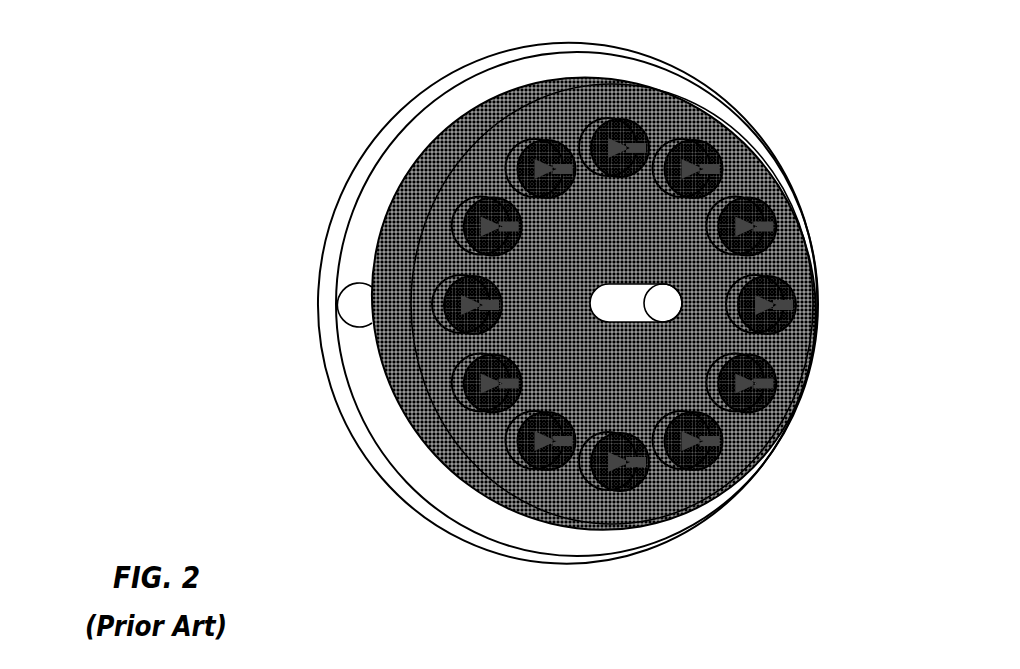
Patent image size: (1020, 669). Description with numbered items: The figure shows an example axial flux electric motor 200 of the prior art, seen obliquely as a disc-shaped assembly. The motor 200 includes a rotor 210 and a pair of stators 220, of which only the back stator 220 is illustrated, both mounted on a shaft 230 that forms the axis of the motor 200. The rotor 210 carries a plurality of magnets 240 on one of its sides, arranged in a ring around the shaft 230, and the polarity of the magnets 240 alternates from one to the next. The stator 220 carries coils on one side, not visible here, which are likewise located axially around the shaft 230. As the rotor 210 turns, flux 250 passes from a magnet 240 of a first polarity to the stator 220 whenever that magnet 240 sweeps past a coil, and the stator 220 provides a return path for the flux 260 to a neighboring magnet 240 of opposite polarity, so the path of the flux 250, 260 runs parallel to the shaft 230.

The axial flux electric motor 200 is at (178, 157).
The rotor 210 is at (493, 428).
The stator 220 is at (404, 104).
The shaft 230 is at (663, 297).
The magnet 240 is at (723, 130).
The flux 250 is at (733, 450).
The flux 260 is at (789, 424).